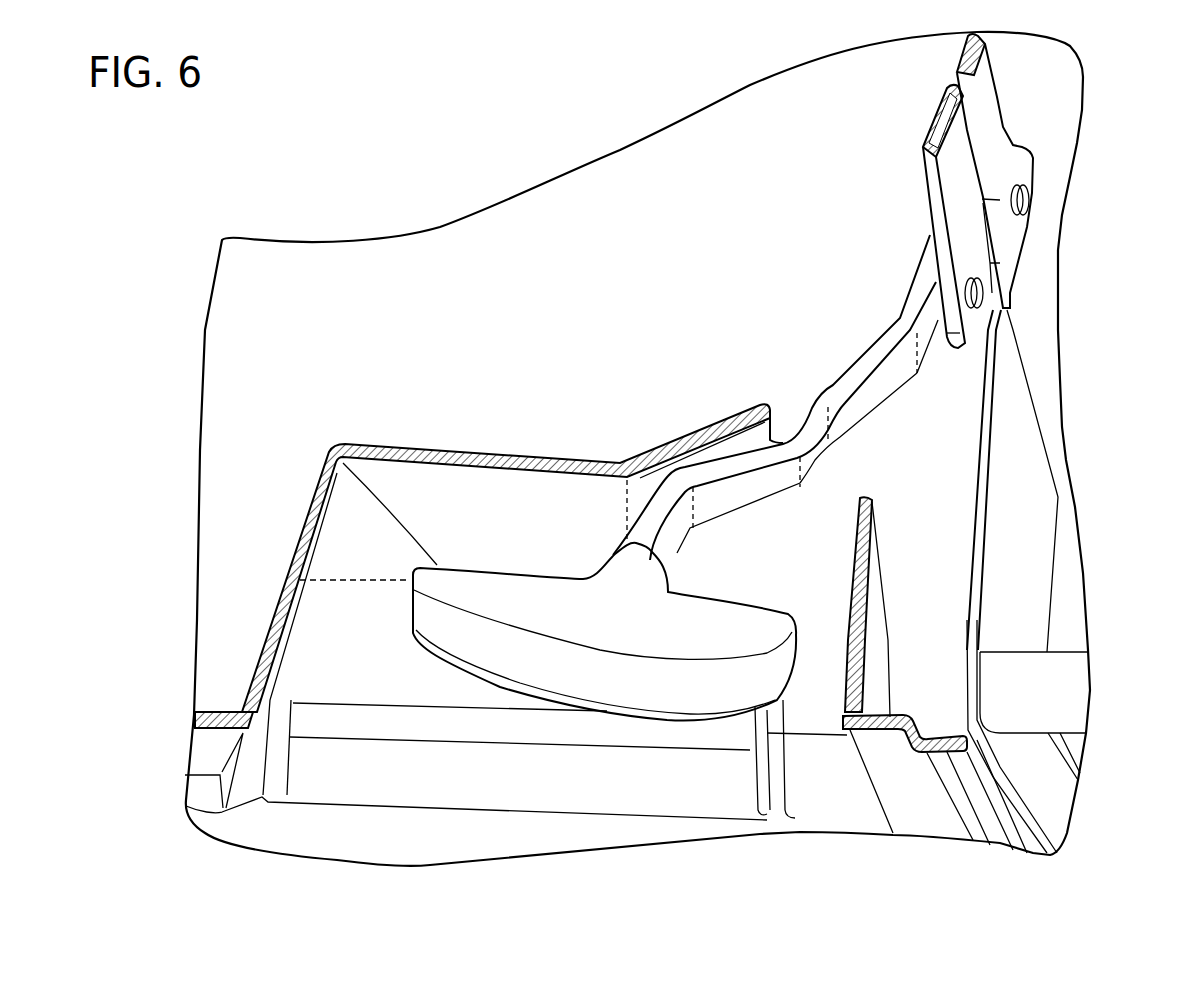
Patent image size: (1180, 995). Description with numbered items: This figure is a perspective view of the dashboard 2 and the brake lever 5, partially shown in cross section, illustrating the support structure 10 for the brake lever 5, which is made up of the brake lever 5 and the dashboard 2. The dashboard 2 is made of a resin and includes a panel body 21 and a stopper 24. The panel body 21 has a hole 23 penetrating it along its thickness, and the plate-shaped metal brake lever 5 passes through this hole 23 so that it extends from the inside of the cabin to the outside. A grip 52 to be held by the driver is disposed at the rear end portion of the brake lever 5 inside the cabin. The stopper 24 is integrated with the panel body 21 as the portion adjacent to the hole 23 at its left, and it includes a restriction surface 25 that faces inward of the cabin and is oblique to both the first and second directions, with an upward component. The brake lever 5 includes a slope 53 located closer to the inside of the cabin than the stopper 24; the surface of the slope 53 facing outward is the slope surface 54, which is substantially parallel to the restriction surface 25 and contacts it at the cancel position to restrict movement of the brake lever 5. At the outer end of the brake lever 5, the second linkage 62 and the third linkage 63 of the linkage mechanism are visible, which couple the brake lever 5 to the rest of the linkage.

The support structure 10 is at (675, 300).
The dashboard 2 is at (360, 664).
The brake lever 5 is at (867, 350).
The panel body 21 is at (487, 515).
The hole 23 is at (775, 432).
The stopper 24 is at (712, 422).
The restriction surface 25 is at (747, 438).
The grip 52 is at (334, 447).
The slope 53 is at (767, 482).
The slope surface 54 is at (707, 457).
The second linkage 62 is at (1000, 100).
The third linkage 63 is at (925, 220).